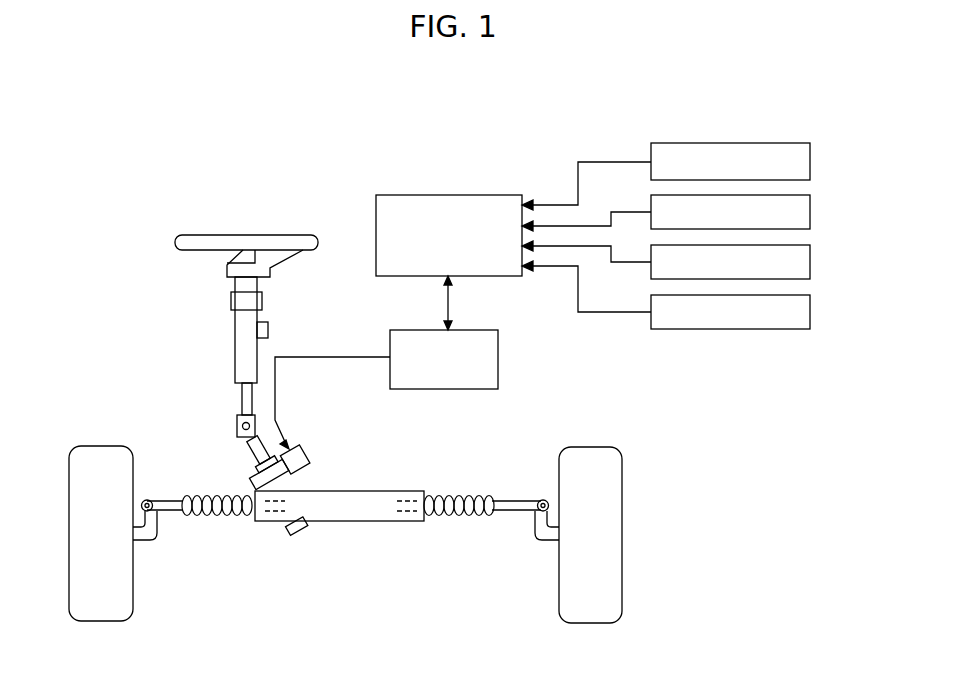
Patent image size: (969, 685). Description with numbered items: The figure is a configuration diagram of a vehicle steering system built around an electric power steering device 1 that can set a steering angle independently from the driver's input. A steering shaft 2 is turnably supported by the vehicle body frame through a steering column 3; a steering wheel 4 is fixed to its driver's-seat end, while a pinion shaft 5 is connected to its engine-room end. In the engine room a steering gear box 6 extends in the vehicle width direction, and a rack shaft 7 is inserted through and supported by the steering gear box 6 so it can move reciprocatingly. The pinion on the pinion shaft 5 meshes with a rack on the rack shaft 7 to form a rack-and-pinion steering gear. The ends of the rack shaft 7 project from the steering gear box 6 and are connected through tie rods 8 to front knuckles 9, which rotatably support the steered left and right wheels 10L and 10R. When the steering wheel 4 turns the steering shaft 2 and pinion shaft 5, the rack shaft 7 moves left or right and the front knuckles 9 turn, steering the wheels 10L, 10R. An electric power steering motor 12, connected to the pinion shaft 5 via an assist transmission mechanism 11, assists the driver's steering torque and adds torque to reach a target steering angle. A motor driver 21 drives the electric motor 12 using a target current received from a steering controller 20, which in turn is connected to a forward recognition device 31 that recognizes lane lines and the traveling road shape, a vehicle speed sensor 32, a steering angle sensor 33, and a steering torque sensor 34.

The electric power steering device 1 is at (152, 377).
The steering shaft 2 is at (242, 401).
The steering column 3 is at (235, 345).
The steering wheel 4 is at (249, 235).
The pinion shaft 5 is at (248, 457).
The steering gear box 6 is at (360, 513).
The rack shaft 7 is at (411, 491).
The tie rods 8 is at (172, 512).
The front knuckles 9 is at (147, 545).
The right wheel 10R is at (98, 623).
The left wheel 10L is at (588, 625).
The assist transmission mechanism 11 is at (257, 482).
The electric power steering motor 12 is at (304, 454).
The steering controller 20 is at (451, 195).
The motor driver 21 is at (481, 330).
The forward recognition device 31 is at (810, 162).
The vehicle speed sensor 32 is at (810, 212).
The steering angle sensor 33 is at (810, 262).
The steering torque sensor 34 is at (810, 312).